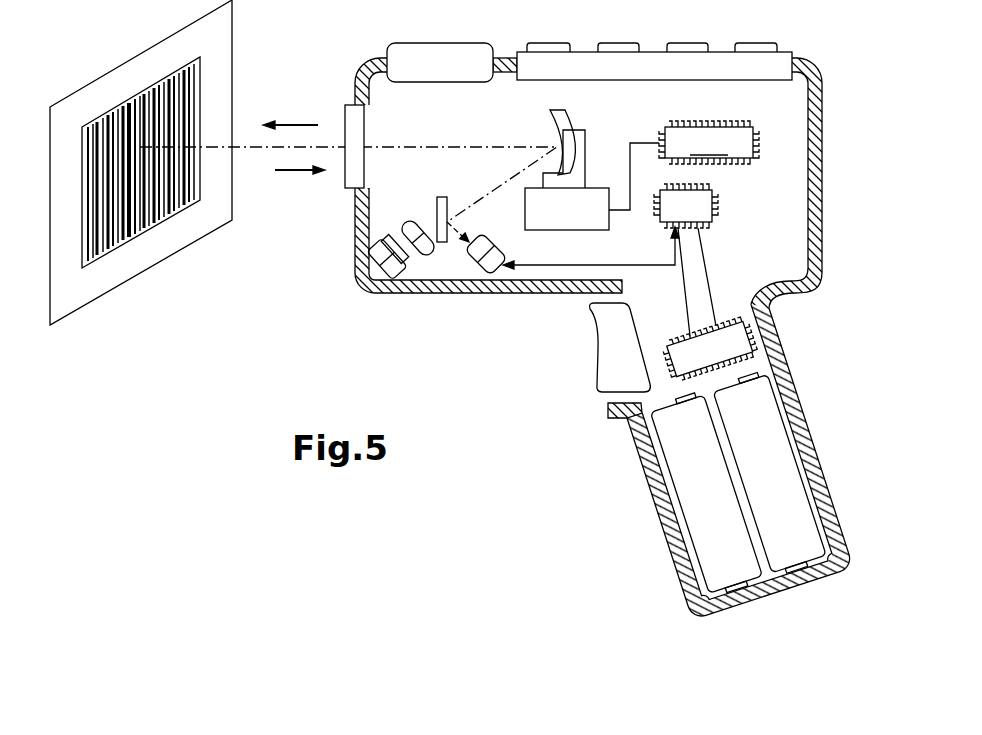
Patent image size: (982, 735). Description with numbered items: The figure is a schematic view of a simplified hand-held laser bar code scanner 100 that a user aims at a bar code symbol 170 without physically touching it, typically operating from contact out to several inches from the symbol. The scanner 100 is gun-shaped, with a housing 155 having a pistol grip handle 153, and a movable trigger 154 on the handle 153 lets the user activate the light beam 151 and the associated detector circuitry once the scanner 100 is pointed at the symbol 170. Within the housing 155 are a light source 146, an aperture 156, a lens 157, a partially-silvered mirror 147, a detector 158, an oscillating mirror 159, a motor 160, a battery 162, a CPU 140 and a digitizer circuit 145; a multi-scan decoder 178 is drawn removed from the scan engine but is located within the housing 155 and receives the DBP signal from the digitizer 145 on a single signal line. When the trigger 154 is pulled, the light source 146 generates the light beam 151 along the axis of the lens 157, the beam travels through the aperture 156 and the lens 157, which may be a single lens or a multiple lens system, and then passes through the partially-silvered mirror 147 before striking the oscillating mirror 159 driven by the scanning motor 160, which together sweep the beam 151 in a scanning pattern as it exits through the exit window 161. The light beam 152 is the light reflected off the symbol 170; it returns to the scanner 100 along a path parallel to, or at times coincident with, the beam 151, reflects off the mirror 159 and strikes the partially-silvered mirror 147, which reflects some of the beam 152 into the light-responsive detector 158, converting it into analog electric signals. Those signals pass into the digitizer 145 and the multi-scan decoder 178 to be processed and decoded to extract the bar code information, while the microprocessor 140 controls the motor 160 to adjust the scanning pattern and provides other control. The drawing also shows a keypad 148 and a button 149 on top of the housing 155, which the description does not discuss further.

The laser bar code scanner 100 is at (572, 324).
The CPU 140 is at (682, 123).
The digitizer circuit 145 is at (667, 218).
The light source 146 is at (395, 275).
The partially-silvered mirror 147 is at (440, 197).
The keypad 148 is at (727, 68).
The button 149 is at (418, 63).
The light beam 151 is at (293, 122).
The light beam 152 is at (293, 173).
The pistol grip handle 153 is at (650, 502).
The movable trigger 154 is at (617, 363).
The housing 155 is at (822, 242).
The aperture 156 is at (390, 234).
The lens 157 is at (408, 223).
The detector 158 is at (477, 263).
The oscillating mirror 159 is at (563, 111).
The motor 160 is at (548, 222).
The exit window 161 is at (343, 107).
The battery 162 is at (782, 543).
The bar code symbol 170 is at (130, 113).
The multi-scan decoder 178 is at (723, 350).